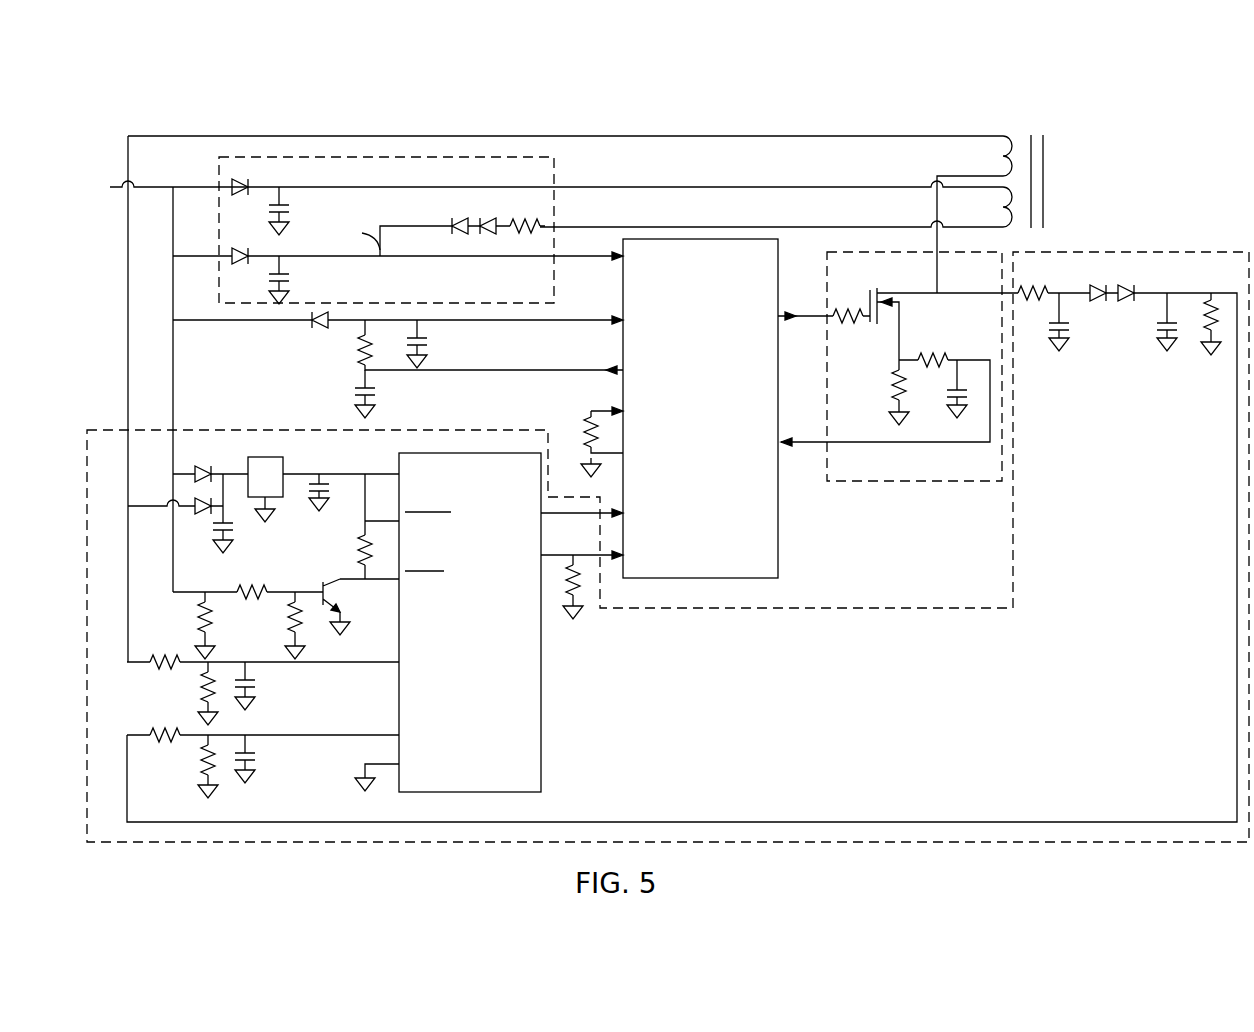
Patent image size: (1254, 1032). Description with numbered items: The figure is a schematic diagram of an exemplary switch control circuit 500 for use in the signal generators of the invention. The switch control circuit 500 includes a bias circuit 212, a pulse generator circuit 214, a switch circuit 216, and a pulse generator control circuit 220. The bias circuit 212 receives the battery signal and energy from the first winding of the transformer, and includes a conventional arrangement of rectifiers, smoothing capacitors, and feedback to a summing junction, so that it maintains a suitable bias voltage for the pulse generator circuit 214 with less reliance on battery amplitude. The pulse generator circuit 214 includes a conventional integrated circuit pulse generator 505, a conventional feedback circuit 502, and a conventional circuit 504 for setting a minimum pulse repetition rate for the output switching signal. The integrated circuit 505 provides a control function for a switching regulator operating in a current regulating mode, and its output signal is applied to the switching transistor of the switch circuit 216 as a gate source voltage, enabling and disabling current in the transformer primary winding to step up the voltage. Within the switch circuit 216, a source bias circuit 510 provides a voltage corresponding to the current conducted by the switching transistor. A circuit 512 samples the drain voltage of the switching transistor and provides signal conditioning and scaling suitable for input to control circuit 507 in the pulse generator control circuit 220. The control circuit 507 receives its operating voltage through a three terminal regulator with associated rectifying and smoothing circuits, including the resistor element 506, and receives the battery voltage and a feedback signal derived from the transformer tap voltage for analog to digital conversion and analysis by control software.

The switch control circuit 500 is at (186, 121).
The bias circuit 212 is at (554, 180).
The feedback circuit 502 is at (346, 362).
The circuit for setting a minimum pulse repetition rate 504 is at (547, 412).
The integrated circuit pulse generator 505 is at (778, 571).
The pulse generator circuit 214 is at (799, 504).
The switch circuit 216 is at (975, 483).
The source bias circuit 510 is at (973, 344).
The drain sampling circuit 512 is at (1177, 400).
The pulse generator control circuit 220 is at (122, 428).
The reset resistor 506 is at (283, 458).
The control circuit 507 is at (542, 735).